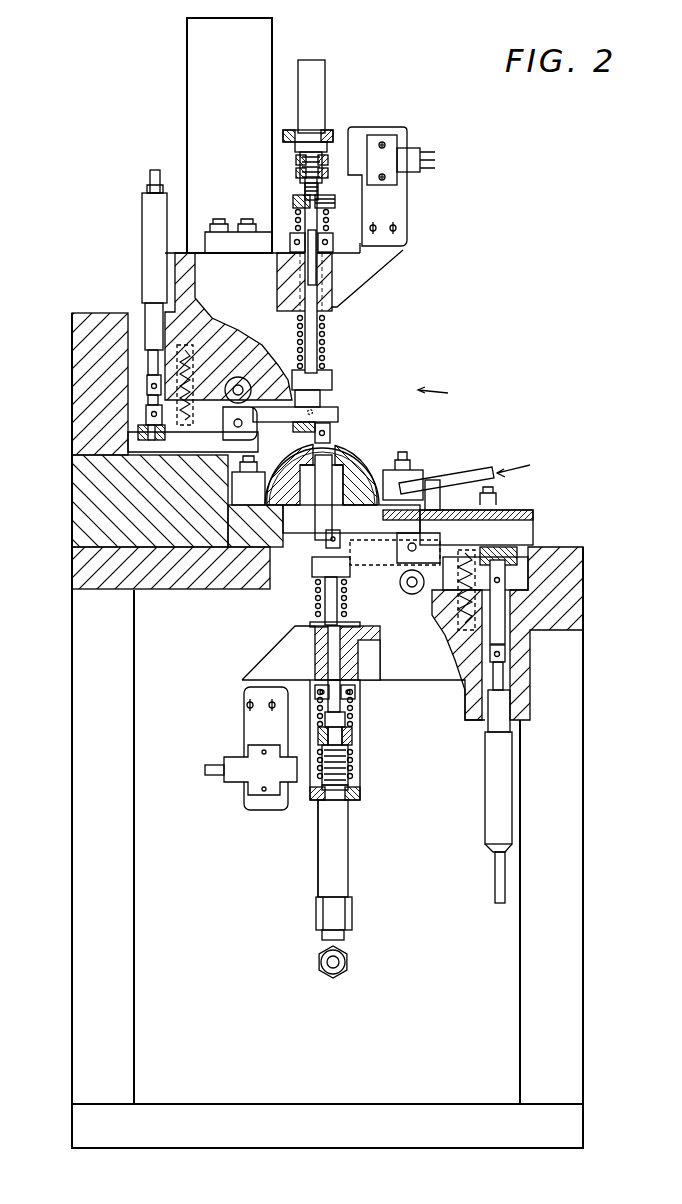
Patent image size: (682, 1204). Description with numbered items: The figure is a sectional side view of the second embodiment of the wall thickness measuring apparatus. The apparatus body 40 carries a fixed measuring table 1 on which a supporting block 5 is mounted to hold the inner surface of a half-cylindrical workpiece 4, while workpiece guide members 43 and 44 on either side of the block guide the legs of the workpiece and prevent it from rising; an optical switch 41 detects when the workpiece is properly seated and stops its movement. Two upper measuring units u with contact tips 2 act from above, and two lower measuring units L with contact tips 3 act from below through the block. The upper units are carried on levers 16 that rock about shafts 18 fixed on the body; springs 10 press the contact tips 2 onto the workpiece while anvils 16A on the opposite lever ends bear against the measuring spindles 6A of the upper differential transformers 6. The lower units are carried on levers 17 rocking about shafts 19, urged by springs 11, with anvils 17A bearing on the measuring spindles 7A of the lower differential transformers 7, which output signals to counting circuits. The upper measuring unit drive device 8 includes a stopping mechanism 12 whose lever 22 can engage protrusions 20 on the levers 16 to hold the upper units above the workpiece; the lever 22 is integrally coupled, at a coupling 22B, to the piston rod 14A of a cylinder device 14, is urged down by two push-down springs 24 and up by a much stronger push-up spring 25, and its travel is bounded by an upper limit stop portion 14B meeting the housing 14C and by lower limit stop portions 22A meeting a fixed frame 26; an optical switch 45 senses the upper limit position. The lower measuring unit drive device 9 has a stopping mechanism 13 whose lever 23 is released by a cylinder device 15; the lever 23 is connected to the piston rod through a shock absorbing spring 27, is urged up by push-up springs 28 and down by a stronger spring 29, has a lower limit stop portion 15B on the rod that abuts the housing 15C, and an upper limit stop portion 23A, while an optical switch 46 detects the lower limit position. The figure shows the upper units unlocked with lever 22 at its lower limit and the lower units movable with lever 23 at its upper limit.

The measuring table 1 is at (372, 510).
The contact tips of the upper measuring units 2 is at (335, 448).
The contact tips of the lower measuring units 3 is at (310, 478).
The workpiece 4 is at (378, 465).
The supporting block 5 is at (286, 498).
The upper differential transformers 6 is at (133, 229).
The measuring spindles of the upper differential transformers 6A is at (146, 393).
The lower differential transformers 7 is at (483, 786).
The measuring spindles of the lower differential transformers 7A is at (505, 672).
The upper measuring unit drive device 8 is at (335, 336).
The lower measuring unit drive device 9 is at (370, 709).
The springs 10 is at (216, 345).
The springs 11 is at (460, 600).
The stopping mechanism 12 is at (332, 388).
The stopping mechanism 13 is at (322, 580).
The cylinder device 14 is at (325, 80).
The movable piston rod 14A is at (312, 150).
The upper limit stop portion 14B is at (297, 158).
The housing of the cylinder device 14C is at (300, 105).
The cylinder device 15 is at (350, 860).
The lower limit stop portion 15B is at (350, 770).
The housing 15C is at (325, 830).
The levers 16 is at (240, 360).
The anvils 16A is at (150, 430).
The levers 17 is at (312, 563).
The anvils 17A is at (530, 612).
The shafts 18 is at (245, 378).
The shafts 19 is at (416, 624).
The protrusions 20 is at (322, 418).
The lever 22 is at (334, 378).
The lower limit stop portions 22A is at (350, 260).
The coupling 22B is at (322, 170).
The lever 23 is at (385, 640).
The upper limit stop portion 23A is at (315, 692).
The push-down springs 24 is at (326, 345).
The push-up spring 25 is at (331, 228).
The frame 26 is at (330, 285).
The shock absorbing spring 27 is at (352, 750).
The push-up springs 28 is at (315, 590).
The spring 29 is at (318, 705).
The wall thickness measuring apparatus body 40 is at (63, 686).
The optical switch 41 is at (460, 478).
The workpiece guide member 43 is at (248, 530).
The workpiece guide member 44 is at (420, 488).
The optical switch 45 is at (385, 150).
The optical switch 46 is at (240, 792).
The lower measuring units L is at (519, 463).
The upper measuring units u is at (439, 391).